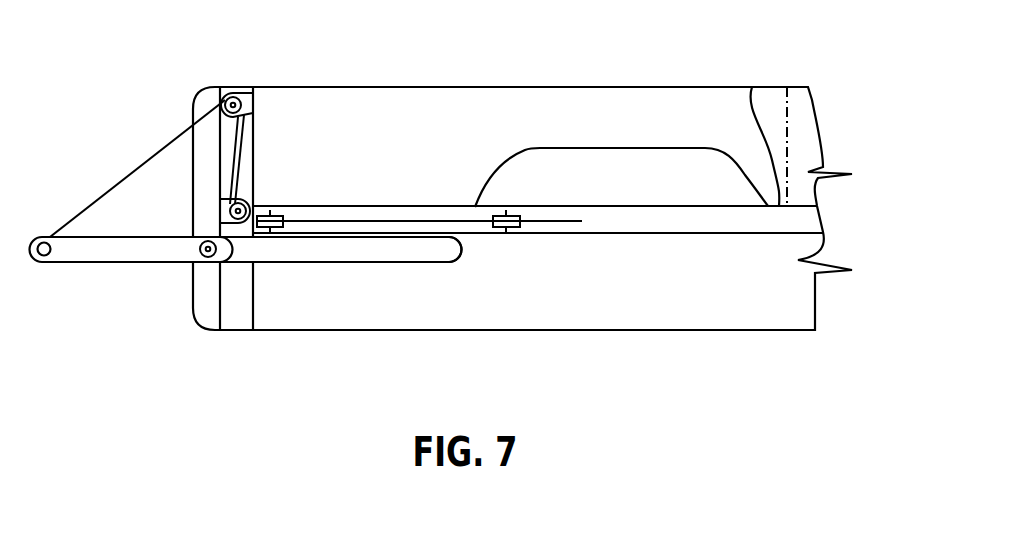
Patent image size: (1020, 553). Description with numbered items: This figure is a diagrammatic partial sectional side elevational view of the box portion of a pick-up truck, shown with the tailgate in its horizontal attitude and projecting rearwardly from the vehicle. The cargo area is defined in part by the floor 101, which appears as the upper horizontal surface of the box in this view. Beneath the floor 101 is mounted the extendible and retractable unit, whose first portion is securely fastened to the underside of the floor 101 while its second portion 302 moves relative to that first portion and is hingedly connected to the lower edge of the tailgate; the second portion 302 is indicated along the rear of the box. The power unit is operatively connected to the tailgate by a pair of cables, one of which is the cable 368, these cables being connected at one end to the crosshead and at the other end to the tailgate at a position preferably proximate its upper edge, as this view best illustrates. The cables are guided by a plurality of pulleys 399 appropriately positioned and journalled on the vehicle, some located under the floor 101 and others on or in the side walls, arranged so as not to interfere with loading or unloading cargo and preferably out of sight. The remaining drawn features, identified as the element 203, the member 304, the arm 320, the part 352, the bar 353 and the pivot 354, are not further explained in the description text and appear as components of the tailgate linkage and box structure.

The floor 101 is at (752, 87).
The hinge / pulley assembly 203 is at (200, 159).
The second portion 302 is at (790, 127).
The housing frame 304 is at (470, 87).
The lever arm 320 is at (128, 258).
The slide bar end 352 is at (455, 260).
The slide bar 353 is at (292, 254).
The pivot pin 354 is at (203, 255).
The cable 368 is at (133, 168).
The pulleys 399 is at (490, 209).